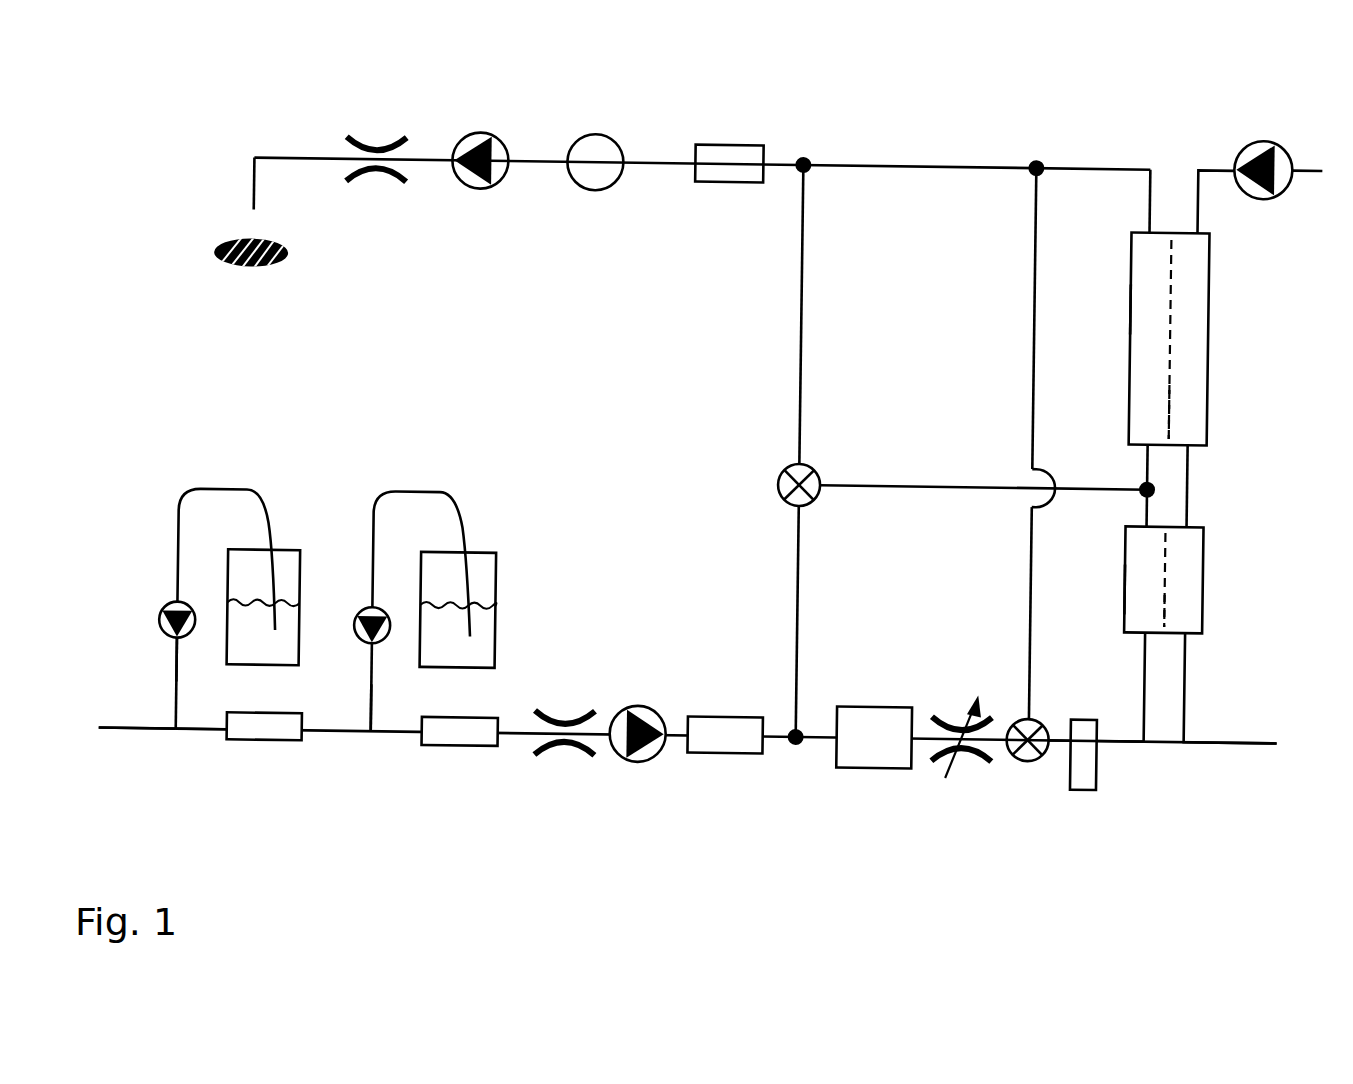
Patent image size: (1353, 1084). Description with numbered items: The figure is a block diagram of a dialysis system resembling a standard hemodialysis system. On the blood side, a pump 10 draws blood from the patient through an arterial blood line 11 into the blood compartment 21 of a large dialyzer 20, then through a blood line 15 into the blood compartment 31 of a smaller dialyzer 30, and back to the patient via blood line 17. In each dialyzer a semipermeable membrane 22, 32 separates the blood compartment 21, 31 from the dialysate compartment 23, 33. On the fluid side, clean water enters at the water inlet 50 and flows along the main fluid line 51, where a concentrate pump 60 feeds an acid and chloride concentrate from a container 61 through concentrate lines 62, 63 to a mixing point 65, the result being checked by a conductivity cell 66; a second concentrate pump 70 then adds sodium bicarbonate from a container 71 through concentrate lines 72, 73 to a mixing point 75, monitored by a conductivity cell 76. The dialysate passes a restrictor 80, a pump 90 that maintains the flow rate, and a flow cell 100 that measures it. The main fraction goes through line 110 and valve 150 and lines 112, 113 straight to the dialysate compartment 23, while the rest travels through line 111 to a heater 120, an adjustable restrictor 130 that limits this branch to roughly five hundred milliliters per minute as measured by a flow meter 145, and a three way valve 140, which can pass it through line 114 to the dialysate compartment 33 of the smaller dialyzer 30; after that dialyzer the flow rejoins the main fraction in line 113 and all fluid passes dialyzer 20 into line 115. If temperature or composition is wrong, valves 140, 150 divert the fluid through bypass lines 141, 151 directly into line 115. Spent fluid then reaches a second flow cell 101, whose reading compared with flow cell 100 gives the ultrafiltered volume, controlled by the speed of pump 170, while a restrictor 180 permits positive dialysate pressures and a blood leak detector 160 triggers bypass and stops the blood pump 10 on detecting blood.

The pump 10 is at (1277, 149).
The arterial blood line 11 is at (1196, 164).
The blood line 15 is at (1190, 478).
The blood line 17 is at (1235, 736).
The large dialyzer 20 is at (1207, 259).
The blood compartment 21 is at (1188, 335).
The semipermeable membrane 22 is at (1171, 400).
The dialysate compartment 23 is at (1137, 295).
The smaller dialyzer 30 is at (1208, 535).
The blood compartment 31 is at (1186, 578).
The semipermeable membrane 32 is at (1170, 602).
The dialysate compartment 33 is at (1141, 582).
The water inlet 50 is at (133, 735).
The main fluid line 51 is at (206, 735).
The concentrate pump 60 is at (165, 618).
The container 61 is at (281, 555).
The concentrate line 62 is at (223, 493).
The concentrate line 63 is at (183, 688).
The mixing point 65 is at (178, 731).
The conductivity cell 66 is at (271, 749).
The concentrate pump 70 is at (362, 618).
The container 71 is at (479, 556).
The concentrate line 72 is at (418, 495).
The concentrate line 73 is at (378, 689).
The mixing point 75 is at (376, 737).
The conductivity cell 76 is at (465, 750).
The restrictor 80 is at (572, 758).
The pump 90 is at (640, 764).
The flow cell 100 is at (724, 756).
The second flow cell 101 is at (716, 184).
The line 110 is at (799, 603).
The line 111 is at (818, 740).
The line 112 is at (948, 483).
The line 113 is at (1142, 460).
The line 114 is at (1123, 741).
The line 115 is at (1081, 164).
The heater 120 is at (870, 769).
The adjustable restrictor 130 is at (972, 764).
The three way valve 140 is at (1028, 760).
The bypass line 141 is at (1033, 367).
The flow meter 145 is at (1087, 786).
The valve 150 is at (810, 465).
The bypass line 151 is at (798, 322).
The blood leak detector 160 is at (583, 189).
The pump 170 is at (471, 190).
The restrictor 180 is at (368, 184).